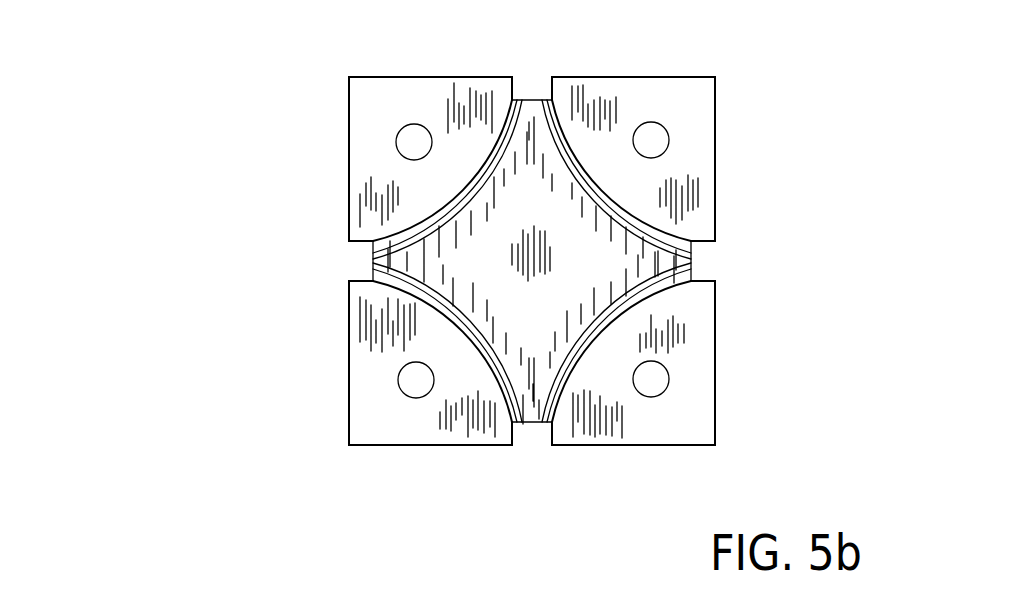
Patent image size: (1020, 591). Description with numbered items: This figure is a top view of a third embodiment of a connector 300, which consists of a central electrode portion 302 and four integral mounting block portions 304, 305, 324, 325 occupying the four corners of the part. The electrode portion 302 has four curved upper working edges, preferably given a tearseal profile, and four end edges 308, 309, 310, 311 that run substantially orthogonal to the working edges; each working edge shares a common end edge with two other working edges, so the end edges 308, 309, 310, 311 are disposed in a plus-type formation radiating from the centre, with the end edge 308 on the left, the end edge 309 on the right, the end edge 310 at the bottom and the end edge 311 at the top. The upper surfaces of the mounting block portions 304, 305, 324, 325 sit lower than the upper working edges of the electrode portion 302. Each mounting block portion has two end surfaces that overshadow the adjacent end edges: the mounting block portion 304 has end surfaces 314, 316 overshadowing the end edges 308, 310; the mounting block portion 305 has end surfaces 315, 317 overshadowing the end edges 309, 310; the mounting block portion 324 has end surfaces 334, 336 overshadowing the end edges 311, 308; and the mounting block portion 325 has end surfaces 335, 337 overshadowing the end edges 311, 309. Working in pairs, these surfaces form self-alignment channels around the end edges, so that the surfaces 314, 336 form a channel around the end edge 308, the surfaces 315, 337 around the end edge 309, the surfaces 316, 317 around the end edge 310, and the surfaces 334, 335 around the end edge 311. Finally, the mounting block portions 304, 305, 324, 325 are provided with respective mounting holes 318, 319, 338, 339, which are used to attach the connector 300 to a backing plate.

The connector 300 is at (210, 287).
The electrode portion 302 is at (575, 243).
The mounting block portion 304 is at (417, 440).
The mounting block portion 305 is at (703, 437).
The end edge 308 is at (376, 261).
The end edge 309 is at (693, 260).
The end edge 310 is at (534, 423).
The end edge 311 is at (532, 98).
The end surface 314 is at (350, 278).
The end surface 315 is at (708, 279).
The end surface 316 is at (516, 424).
The end surface 317 is at (548, 424).
The mounting hole 318 is at (417, 390).
The mounting hole 319 is at (659, 384).
The mounting block portion 324 is at (412, 114).
The mounting block portion 325 is at (703, 113).
The end surface 334 is at (513, 95).
The end surface 335 is at (551, 97).
The end surface 336 is at (348, 245).
The end surface 337 is at (713, 242).
The mounting hole 338 is at (410, 150).
The mounting hole 339 is at (657, 141).